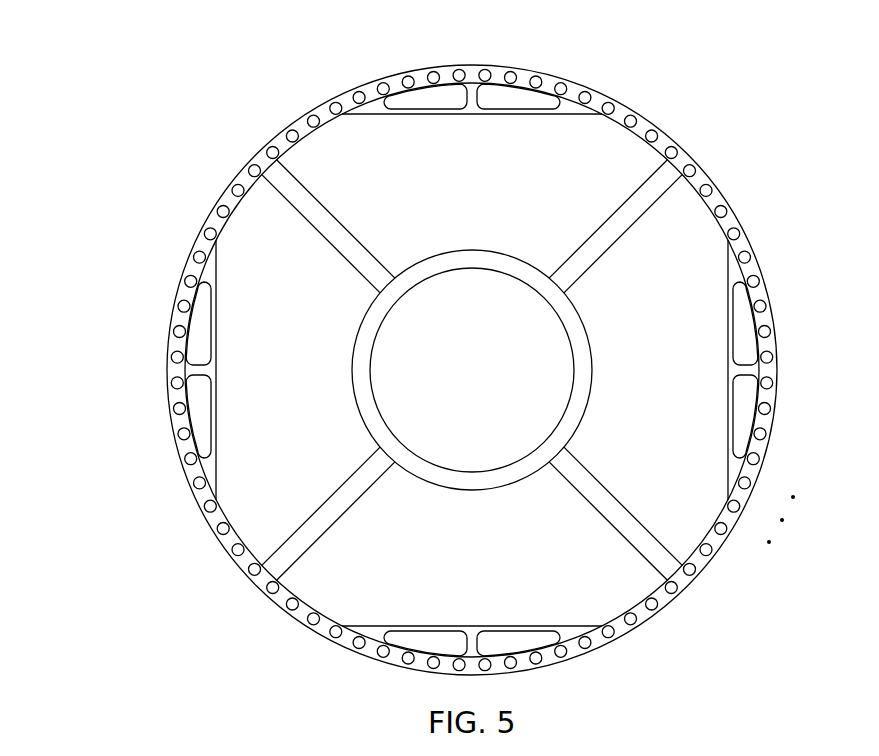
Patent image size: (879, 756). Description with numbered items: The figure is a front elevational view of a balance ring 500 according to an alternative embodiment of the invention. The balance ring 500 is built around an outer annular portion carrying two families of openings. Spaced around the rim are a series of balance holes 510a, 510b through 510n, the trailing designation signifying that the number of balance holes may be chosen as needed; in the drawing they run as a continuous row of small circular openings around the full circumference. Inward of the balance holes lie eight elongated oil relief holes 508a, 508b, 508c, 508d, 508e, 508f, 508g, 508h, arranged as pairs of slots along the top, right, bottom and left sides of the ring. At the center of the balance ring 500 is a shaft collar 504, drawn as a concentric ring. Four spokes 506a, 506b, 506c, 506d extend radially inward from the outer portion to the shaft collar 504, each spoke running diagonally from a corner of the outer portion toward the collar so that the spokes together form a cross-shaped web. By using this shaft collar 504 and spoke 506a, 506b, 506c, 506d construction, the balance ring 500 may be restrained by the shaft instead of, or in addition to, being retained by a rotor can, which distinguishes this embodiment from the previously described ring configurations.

The balance ring 500 is at (121, 168).
The shaft collar 504 is at (352, 370).
The spoke 506a is at (600, 228).
The spoke 506b is at (637, 518).
The spoke 506c is at (323, 503).
The spoke 506d is at (331, 243).
The oil relief hole 508a is at (430, 97).
The oil relief hole 508b is at (515, 97).
The oil relief hole 508c is at (748, 322).
The oil relief hole 508d is at (745, 398).
The oil relief hole 508e is at (516, 638).
The oil relief hole 508f is at (423, 638).
The oil relief hole 508g is at (193, 395).
The oil relief hole 508h is at (197, 320).
The balance hole 510a is at (764, 436).
The balance hole 510b is at (757, 462).
The balance hole 510n is at (710, 553).